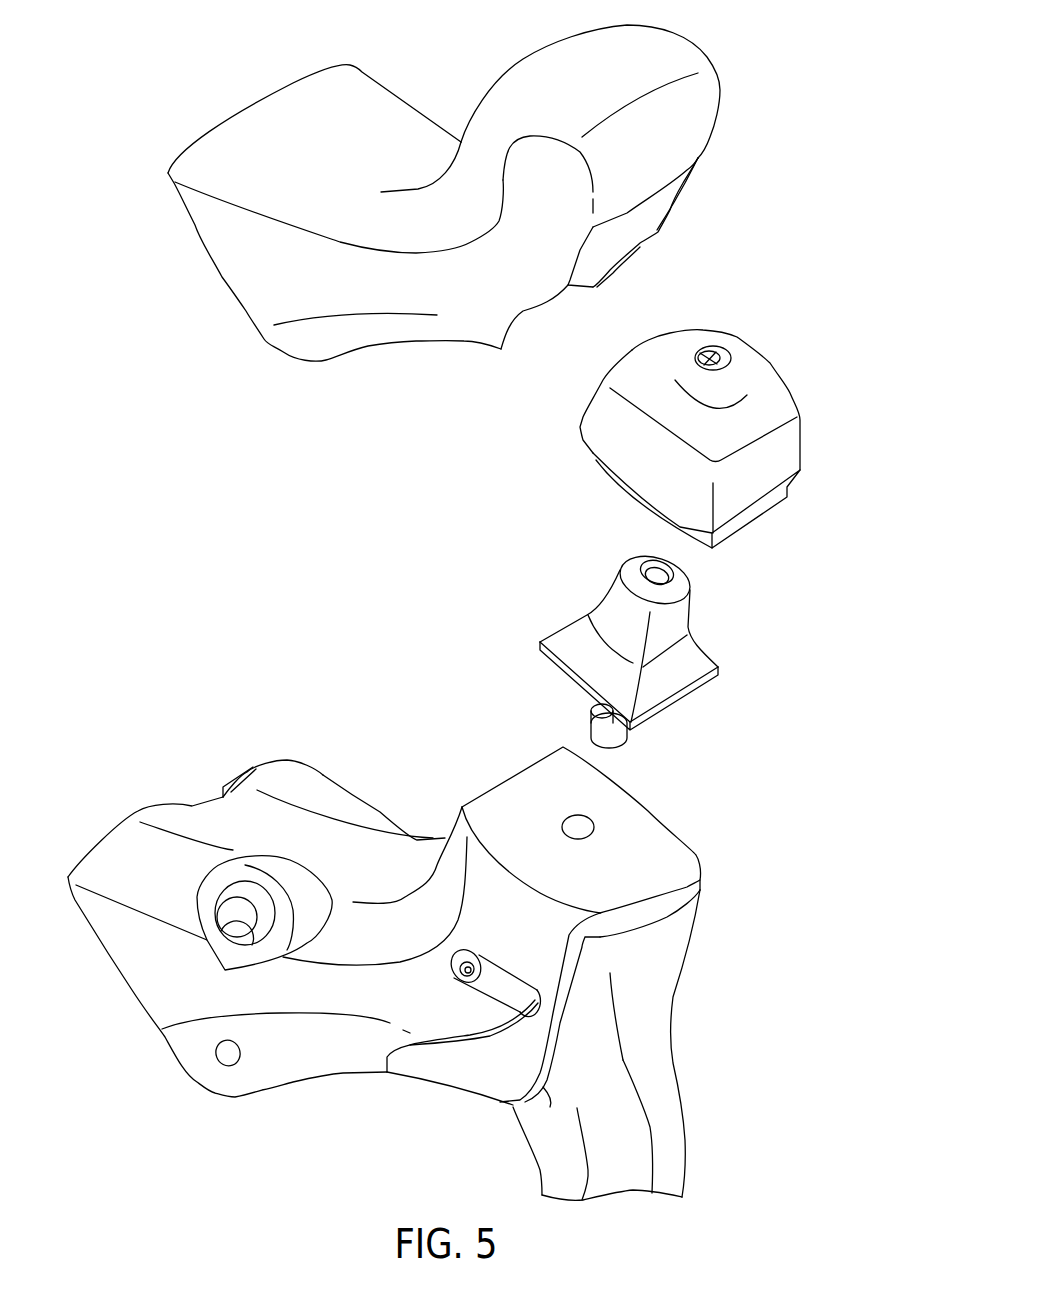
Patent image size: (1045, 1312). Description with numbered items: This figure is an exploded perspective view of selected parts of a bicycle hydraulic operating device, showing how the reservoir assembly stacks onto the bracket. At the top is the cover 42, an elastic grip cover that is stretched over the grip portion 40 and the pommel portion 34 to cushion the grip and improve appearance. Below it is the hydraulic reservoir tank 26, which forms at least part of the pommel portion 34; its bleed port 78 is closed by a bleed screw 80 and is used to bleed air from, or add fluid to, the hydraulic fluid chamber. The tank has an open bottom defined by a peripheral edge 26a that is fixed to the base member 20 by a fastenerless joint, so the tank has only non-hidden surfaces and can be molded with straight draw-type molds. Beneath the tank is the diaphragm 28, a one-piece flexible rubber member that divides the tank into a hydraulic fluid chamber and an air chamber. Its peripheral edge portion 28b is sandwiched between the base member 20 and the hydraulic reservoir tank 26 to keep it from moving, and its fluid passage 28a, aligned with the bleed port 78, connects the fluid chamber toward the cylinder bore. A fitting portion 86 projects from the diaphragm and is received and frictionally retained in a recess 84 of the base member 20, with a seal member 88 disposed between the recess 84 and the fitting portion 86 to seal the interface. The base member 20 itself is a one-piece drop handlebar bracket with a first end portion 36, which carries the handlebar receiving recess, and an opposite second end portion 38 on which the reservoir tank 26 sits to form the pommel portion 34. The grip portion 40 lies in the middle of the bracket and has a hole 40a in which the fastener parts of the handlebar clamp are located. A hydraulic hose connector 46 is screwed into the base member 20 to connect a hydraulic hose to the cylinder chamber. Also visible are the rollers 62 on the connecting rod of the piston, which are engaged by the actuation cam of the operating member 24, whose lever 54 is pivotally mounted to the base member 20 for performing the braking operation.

The cover 42 is at (680, 36).
The hydraulic reservoir tank 26 is at (671, 426).
The peripheral edge 26a is at (747, 525).
The bleed screw 80 is at (703, 351).
The bleed port 78 is at (716, 370).
The diaphragm 28 is at (634, 628).
The fluid passage 28a is at (653, 563).
The peripheral edge portion 28b is at (688, 692).
The seal member 88 is at (591, 711).
The fitting portion 86 is at (615, 745).
The base member 20 is at (303, 937).
The first end portion 36 is at (185, 822).
The hydraulic hose connector 46 is at (233, 773).
The grip portion 40 is at (337, 848).
The hole 40a is at (245, 940).
The pommel portion 34 is at (598, 924).
The recess 84 is at (578, 818).
The rollers 62 is at (492, 965).
The operating member 24 is at (614, 1045).
The lever 54 is at (668, 1144).
The second end portion 38 is at (550, 1107).